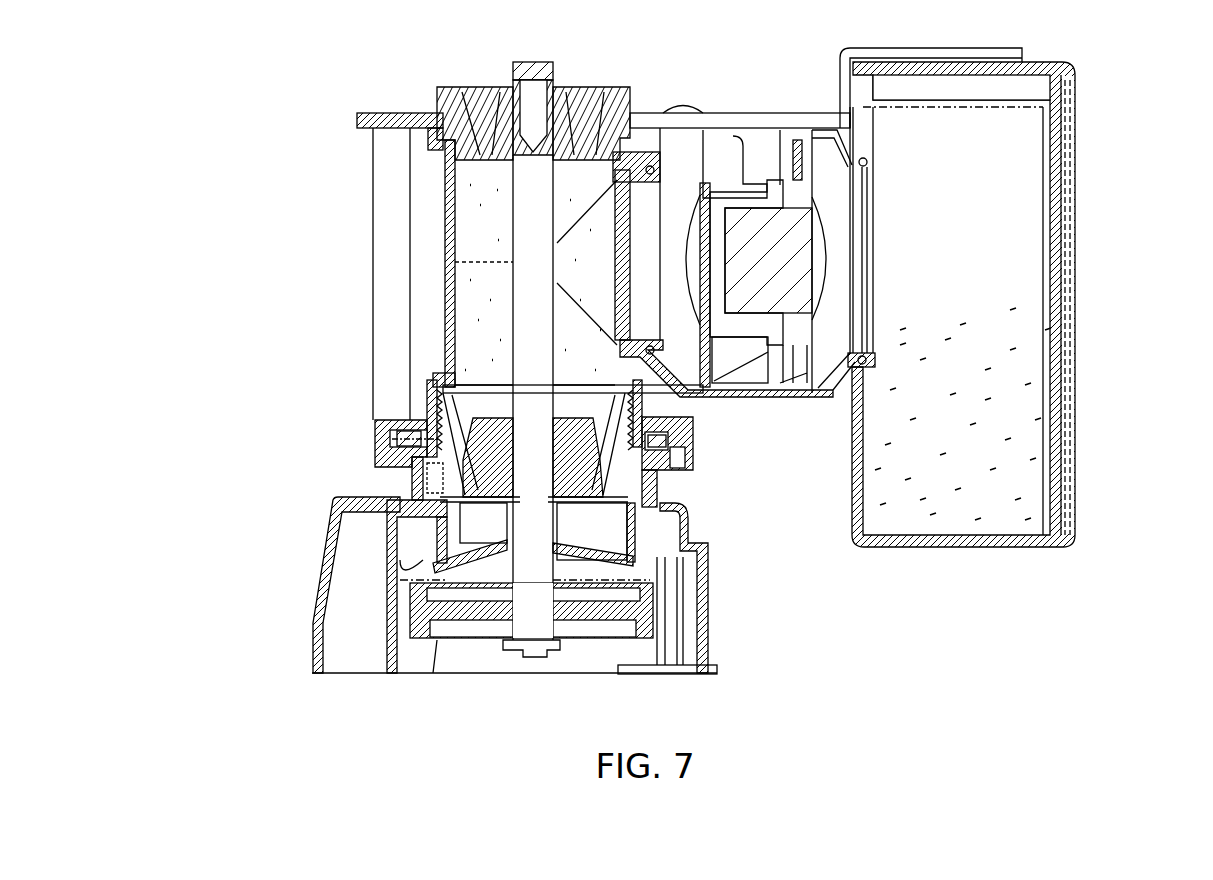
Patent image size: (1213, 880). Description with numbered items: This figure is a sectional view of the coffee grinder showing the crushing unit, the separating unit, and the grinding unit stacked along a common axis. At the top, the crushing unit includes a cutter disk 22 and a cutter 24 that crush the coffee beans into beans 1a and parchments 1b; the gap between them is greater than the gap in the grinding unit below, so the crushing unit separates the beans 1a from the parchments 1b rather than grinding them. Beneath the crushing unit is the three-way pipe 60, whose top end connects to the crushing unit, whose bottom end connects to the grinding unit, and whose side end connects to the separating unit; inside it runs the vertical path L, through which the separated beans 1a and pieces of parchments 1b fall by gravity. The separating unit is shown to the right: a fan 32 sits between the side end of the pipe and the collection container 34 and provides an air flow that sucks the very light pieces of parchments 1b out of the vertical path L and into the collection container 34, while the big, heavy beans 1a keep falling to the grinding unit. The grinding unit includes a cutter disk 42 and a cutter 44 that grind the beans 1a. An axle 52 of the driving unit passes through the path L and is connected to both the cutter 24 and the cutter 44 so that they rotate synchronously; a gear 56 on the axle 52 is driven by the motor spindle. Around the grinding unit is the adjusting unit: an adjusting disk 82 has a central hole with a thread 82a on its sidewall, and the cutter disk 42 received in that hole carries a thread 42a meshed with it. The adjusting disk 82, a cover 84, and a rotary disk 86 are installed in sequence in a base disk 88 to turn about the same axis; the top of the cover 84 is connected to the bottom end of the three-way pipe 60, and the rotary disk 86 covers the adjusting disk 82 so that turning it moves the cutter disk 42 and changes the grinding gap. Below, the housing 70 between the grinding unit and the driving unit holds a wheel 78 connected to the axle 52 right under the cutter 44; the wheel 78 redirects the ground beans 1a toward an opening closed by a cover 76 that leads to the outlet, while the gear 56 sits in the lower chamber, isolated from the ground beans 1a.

The cutter disk 22 is at (469, 98).
The cutter 24 is at (502, 82).
The axle 52 is at (547, 180).
The three-way pipe 60 is at (433, 165).
The vertical path L is at (450, 212).
The beans 1a is at (473, 273).
The parchments 1b is at (677, 187).
The fan 32 is at (750, 157).
The collection container 34 is at (1017, 297).
The cover 84 is at (428, 410).
The rotary disk 86 is at (385, 422).
The adjusting disk 82 is at (380, 437).
The thread 42a is at (304, 424).
The thread 82a is at (397, 440).
The base disk 88 is at (413, 497).
The cutter disk 42 is at (590, 423).
The cutter 44 is at (600, 490).
The wheel 78 is at (600, 520).
The housing 70 is at (378, 645).
The cover 76 is at (327, 557).
The gear 56 is at (583, 615).